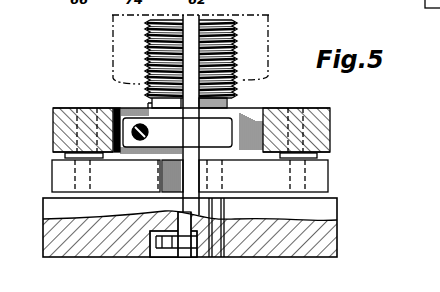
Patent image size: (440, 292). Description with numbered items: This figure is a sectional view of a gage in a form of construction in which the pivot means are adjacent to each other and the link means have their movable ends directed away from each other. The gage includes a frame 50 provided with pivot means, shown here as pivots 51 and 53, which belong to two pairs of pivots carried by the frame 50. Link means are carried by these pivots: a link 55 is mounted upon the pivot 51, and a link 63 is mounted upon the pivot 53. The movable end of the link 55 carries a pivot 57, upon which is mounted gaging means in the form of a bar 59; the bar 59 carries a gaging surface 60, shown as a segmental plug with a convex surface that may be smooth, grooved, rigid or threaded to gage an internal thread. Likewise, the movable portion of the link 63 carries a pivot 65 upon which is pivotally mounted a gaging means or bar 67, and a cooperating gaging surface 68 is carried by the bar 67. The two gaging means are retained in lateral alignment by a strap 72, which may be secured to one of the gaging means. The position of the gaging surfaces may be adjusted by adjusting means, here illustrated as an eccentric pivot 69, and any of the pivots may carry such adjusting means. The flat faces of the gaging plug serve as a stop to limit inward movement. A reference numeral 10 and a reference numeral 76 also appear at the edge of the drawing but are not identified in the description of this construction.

The machine frame 10 is at (426, 1).
The frame 50 is at (326, 210).
The pivot 51 is at (163, 168).
The pivot 53 is at (222, 177).
The link 55 is at (56, 170).
The pivot 57 is at (85, 108).
The bar 59 is at (58, 118).
The gaging surface 60 is at (147, 52).
The link 63 is at (322, 168).
The pivot 65 is at (300, 110).
The bar 67 is at (317, 128).
The gaging surface 68 is at (228, 35).
The eccentric pivot 69 is at (160, 211).
The strap 72 is at (176, 131).
The screw head 76 is at (180, 28).